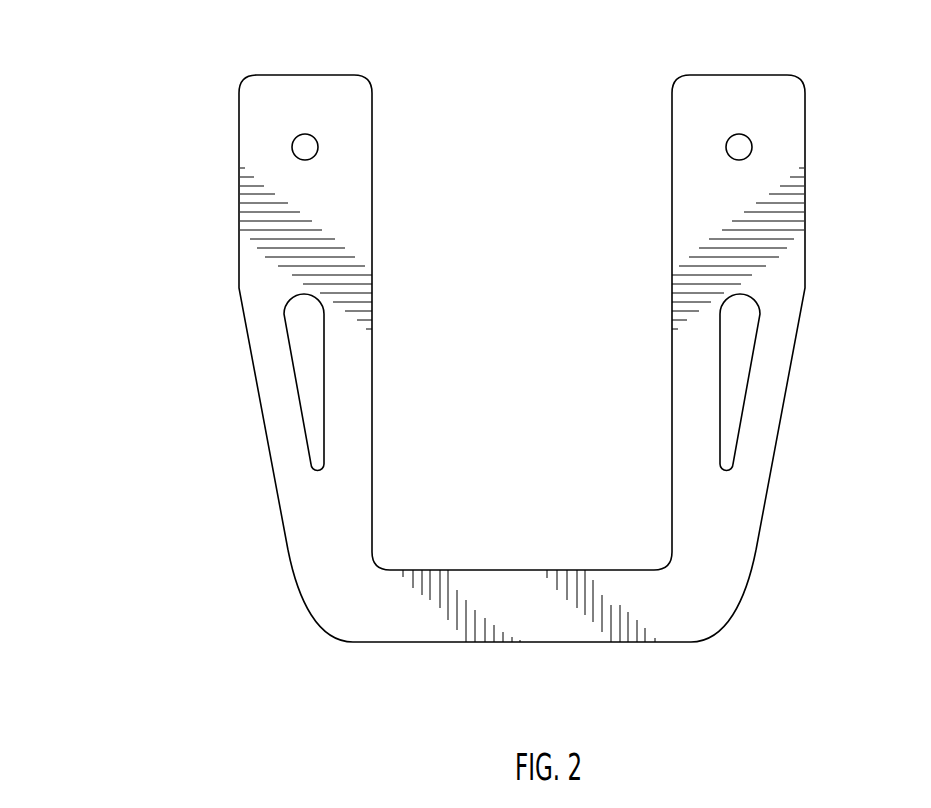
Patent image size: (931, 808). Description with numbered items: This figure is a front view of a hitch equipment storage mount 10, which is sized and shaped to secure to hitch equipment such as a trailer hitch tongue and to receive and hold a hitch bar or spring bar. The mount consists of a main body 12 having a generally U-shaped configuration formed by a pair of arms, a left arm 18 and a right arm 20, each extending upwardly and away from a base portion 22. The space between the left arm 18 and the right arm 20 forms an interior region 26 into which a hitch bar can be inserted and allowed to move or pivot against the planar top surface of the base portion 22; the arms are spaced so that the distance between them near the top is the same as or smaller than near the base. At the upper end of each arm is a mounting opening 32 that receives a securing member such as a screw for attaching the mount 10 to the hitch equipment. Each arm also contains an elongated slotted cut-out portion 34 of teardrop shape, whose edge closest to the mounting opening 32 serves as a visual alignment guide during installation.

The hitch equipment storage mount 10 is at (130, 135).
The main body 12 is at (766, 497).
The left arm 18 is at (240, 210).
The right arm 20 is at (790, 225).
The base portion 22 is at (555, 638).
The interior region 26 is at (463, 458).
The mounting opening 32 is at (292, 147).
The elongated slotted cut-out portion 34 is at (748, 382).